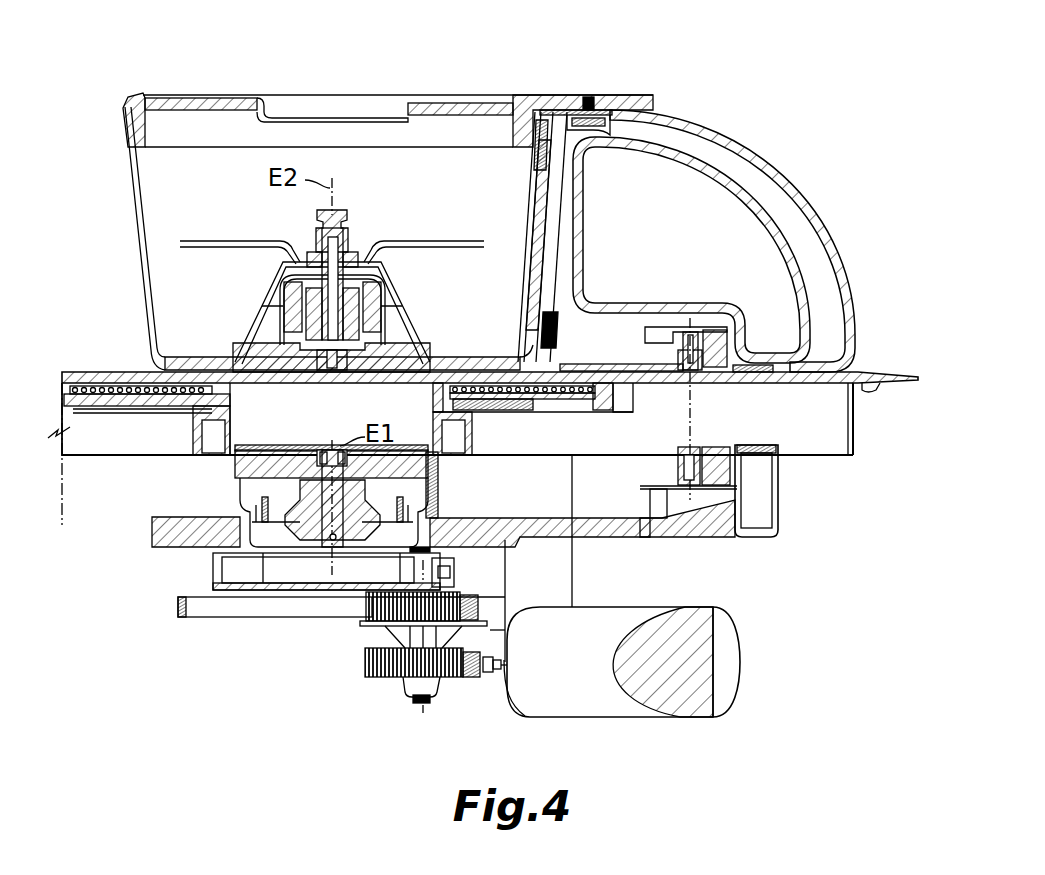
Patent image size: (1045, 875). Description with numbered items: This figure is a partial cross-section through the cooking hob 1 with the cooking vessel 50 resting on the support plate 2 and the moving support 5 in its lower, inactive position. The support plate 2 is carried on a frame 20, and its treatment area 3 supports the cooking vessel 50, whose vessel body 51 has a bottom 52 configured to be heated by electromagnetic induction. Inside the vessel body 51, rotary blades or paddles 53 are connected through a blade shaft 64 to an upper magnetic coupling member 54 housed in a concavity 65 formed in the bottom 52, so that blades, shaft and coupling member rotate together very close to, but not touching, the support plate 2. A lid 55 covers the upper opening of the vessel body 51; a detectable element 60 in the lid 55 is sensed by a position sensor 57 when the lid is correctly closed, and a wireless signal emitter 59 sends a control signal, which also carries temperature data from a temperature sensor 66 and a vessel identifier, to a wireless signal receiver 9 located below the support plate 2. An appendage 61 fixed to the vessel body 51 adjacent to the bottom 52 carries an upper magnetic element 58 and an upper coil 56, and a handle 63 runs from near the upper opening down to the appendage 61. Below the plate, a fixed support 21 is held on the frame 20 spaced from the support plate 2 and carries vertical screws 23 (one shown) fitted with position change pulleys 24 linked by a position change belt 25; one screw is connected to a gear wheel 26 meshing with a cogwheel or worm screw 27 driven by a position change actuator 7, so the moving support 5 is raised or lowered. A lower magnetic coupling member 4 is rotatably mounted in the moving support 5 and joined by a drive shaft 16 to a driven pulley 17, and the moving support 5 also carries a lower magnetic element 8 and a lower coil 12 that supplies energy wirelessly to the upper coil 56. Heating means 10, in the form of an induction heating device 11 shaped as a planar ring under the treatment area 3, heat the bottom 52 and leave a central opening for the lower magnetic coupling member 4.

The cooking hob 1 is at (165, 672).
The support plate 2 is at (803, 385).
The treatment area 3 is at (138, 366).
The lower magnetic coupling member 4 is at (237, 468).
The moving support 5 is at (157, 530).
The position change actuator 7 is at (600, 717).
The lower magnetic element 8 is at (760, 462).
The wireless signal receiver 9 is at (690, 490).
The heating means 10 is at (108, 425).
The induction heating device 11 is at (165, 395).
The lower coil 12 is at (715, 490).
The drive shaft 16 is at (317, 532).
The driven pulley 17 is at (268, 510).
The frame 20 is at (855, 430).
The fixed support 21 is at (302, 590).
The vertical screws 23 is at (437, 492).
The position change pulleys 24 is at (370, 600).
The position change belt 25 is at (178, 605).
The gear wheel 26 is at (380, 678).
The cogwheel or worm screw 27 is at (488, 676).
The cooking vessel 50 is at (425, 60).
The vessel body 51 is at (140, 200).
The bottom 52 is at (170, 360).
The rotary blades or paddles 53 is at (440, 240).
The upper magnetic coupling member 54 is at (415, 332).
The lid 55 is at (215, 95).
The upper coil 56 is at (715, 330).
The position sensor 57 is at (588, 130).
The upper magnetic element 58 is at (758, 365).
The wireless signal emitter 59 is at (683, 332).
The detectable element 60 is at (590, 96).
The appendage 61 is at (640, 310).
The handle 63 is at (790, 162).
The blade shaft 64 is at (385, 282).
The concavity 65 is at (262, 330).
The temperature sensor 66 is at (560, 332).